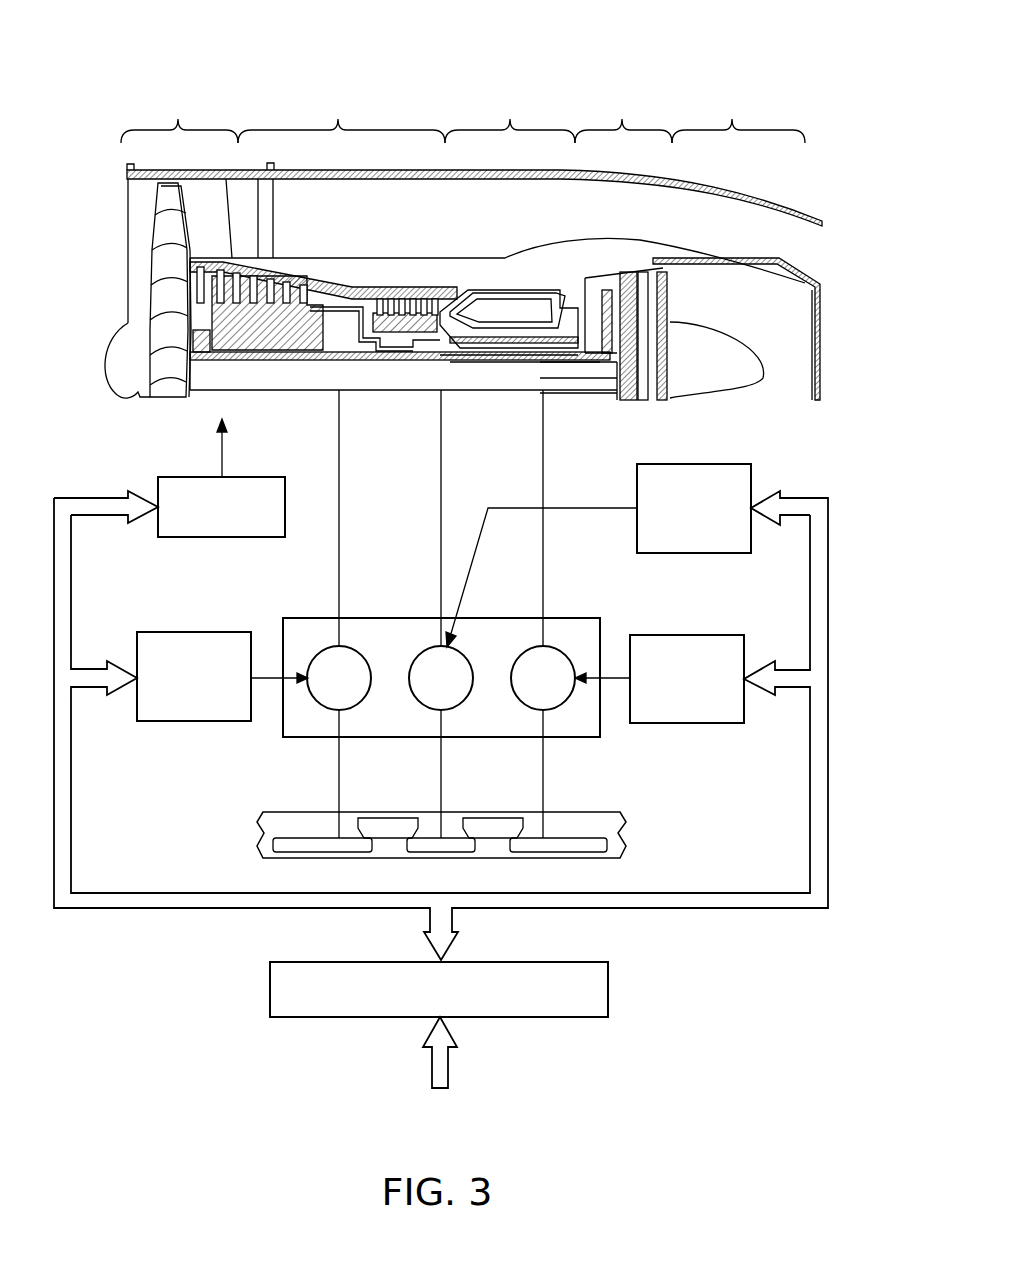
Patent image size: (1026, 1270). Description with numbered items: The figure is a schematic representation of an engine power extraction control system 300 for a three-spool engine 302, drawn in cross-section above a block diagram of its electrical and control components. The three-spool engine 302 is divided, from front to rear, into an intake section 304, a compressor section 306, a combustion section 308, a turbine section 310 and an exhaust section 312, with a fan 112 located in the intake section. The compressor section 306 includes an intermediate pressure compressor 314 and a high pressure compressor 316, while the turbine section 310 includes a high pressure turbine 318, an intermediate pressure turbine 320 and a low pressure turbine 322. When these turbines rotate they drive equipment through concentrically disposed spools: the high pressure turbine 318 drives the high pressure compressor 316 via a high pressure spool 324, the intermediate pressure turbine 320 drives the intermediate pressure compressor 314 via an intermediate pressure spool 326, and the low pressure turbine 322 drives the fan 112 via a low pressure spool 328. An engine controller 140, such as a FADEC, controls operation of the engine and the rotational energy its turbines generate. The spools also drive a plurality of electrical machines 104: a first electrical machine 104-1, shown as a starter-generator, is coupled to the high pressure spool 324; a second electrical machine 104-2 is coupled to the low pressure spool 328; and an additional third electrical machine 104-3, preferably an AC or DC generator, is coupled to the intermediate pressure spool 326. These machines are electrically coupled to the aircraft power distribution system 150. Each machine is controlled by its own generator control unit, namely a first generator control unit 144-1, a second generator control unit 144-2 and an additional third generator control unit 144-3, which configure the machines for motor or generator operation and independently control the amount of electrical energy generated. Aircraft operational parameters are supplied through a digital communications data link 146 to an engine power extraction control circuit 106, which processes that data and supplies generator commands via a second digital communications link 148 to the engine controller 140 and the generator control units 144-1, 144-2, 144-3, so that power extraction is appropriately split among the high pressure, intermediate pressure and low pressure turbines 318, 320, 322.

The engine power extraction system 300 is at (80, 142).
The three-spool engine 302 is at (843, 349).
The intake section 304 is at (179, 115).
The compressor section 306 is at (341, 115).
The combustion section 308 is at (510, 115).
The turbine section 310 is at (623, 115).
The exhaust section 312 is at (738, 115).
The combustion section 112 is at (160, 258).
The intermediate pressure compressor 314 is at (268, 345).
The high pressure compressor 316 is at (410, 360).
The high pressure turbine 318 is at (583, 297).
The intermediate pressure turbine 320 is at (620, 290).
The low pressure turbine 322 is at (670, 285).
The high pressure spool 324 is at (474, 347).
The intermediate pressure spool 326 is at (527, 367).
The low pressure spool 328 is at (583, 380).
The engine controller 140 is at (167, 476).
The electrical machines 104 is at (295, 618).
The first electrical machine 104-1 is at (520, 709).
The second electrical machine 104-2 is at (351, 648).
The third electrical machine 104-3 is at (418, 709).
The first generator control unit 144-1 is at (700, 634).
The second generator control unit 144-2 is at (181, 631).
The third generator control unit 144-3 is at (753, 473).
The second digital communications link 148 is at (830, 606).
The aircraft power distribution system 150 is at (256, 840).
The engine power extraction control circuit 106 is at (610, 990).
The digital communications data link 146 is at (448, 1066).